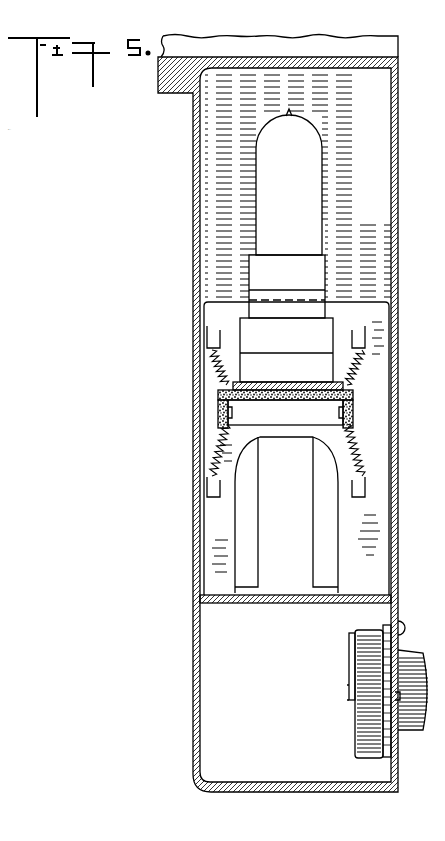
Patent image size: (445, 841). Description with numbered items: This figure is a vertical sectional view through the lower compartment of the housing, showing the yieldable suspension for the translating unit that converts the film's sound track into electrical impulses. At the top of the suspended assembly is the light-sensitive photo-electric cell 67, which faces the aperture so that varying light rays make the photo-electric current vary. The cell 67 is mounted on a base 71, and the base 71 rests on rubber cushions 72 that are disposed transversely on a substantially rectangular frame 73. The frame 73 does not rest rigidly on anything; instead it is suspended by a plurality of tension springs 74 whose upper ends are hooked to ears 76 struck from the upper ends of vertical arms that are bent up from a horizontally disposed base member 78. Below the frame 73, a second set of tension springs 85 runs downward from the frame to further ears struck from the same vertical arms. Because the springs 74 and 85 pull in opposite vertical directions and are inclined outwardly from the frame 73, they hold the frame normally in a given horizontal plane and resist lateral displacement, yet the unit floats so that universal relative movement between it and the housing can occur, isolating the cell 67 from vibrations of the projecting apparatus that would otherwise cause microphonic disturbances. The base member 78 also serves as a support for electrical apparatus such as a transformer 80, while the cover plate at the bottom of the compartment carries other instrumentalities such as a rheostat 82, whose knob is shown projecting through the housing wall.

The photo-electric cell 67 is at (287, 213).
The base 71 is at (357, 381).
The rubber cushions 72 is at (353, 394).
The rectangular frame 73 is at (323, 422).
The tension springs 74 is at (360, 358).
The ears 76 is at (226, 323).
The base member 78 is at (295, 603).
The transformer 80 is at (286, 515).
The rheostat 82 is at (356, 720).
The tension springs 85 is at (227, 443).